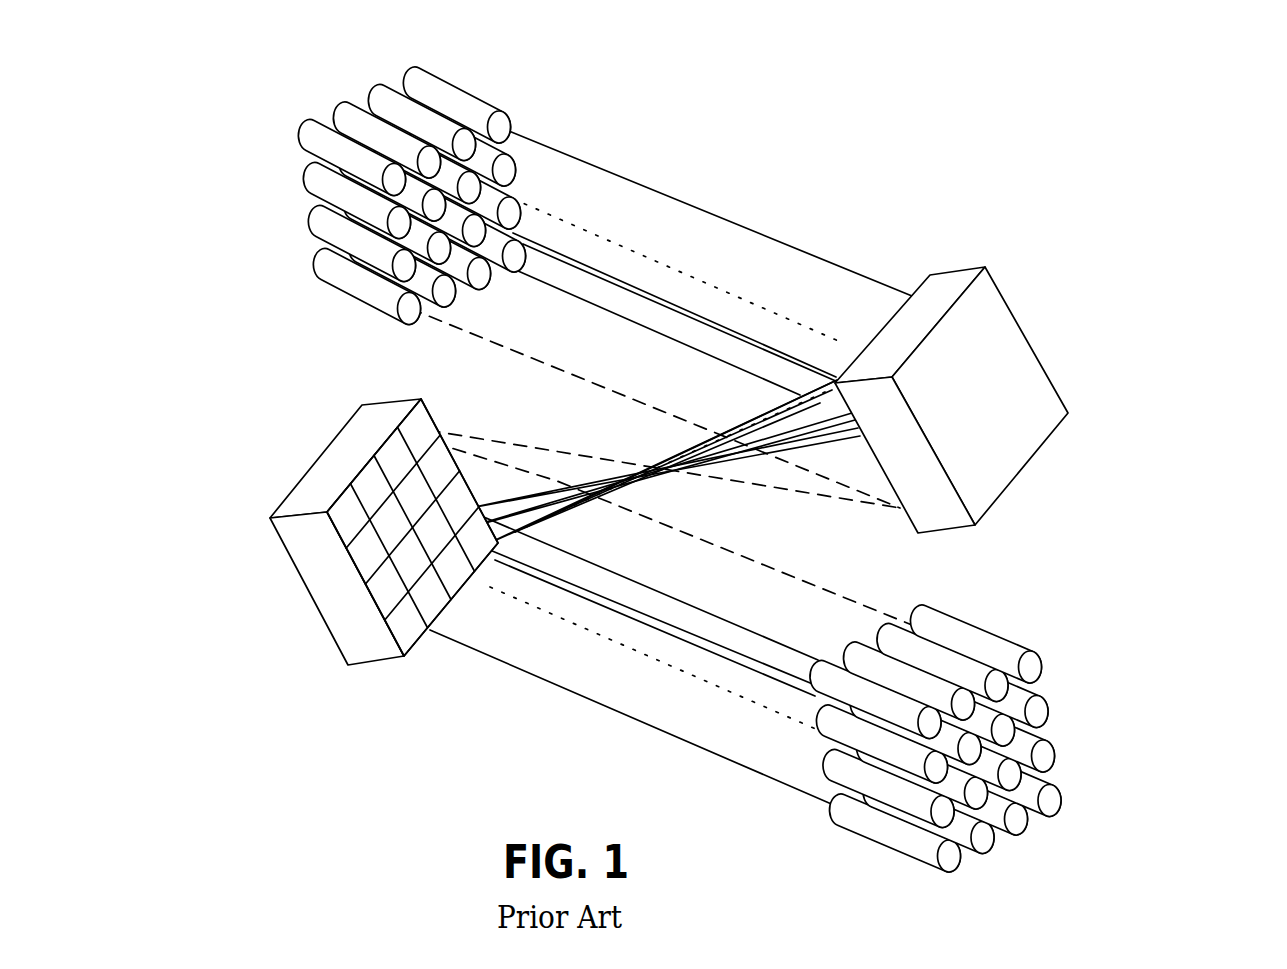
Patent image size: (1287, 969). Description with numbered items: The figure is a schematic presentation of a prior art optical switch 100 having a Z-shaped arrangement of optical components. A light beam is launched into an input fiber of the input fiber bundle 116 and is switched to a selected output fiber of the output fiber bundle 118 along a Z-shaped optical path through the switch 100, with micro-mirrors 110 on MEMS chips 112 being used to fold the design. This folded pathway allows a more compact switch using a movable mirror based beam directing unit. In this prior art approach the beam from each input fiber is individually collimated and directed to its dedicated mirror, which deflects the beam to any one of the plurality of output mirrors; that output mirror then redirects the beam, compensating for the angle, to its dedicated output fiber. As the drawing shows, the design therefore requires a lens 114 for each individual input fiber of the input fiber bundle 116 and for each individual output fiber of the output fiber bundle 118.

The optical switch 100 is at (1157, 209).
The micro-mirrors 110 is at (418, 417).
The MEMS chips 112 is at (1015, 315).
The lens 114 is at (353, 120).
The input fiber bundle 116 is at (318, 143).
The output fiber bundle 118 is at (1005, 640).